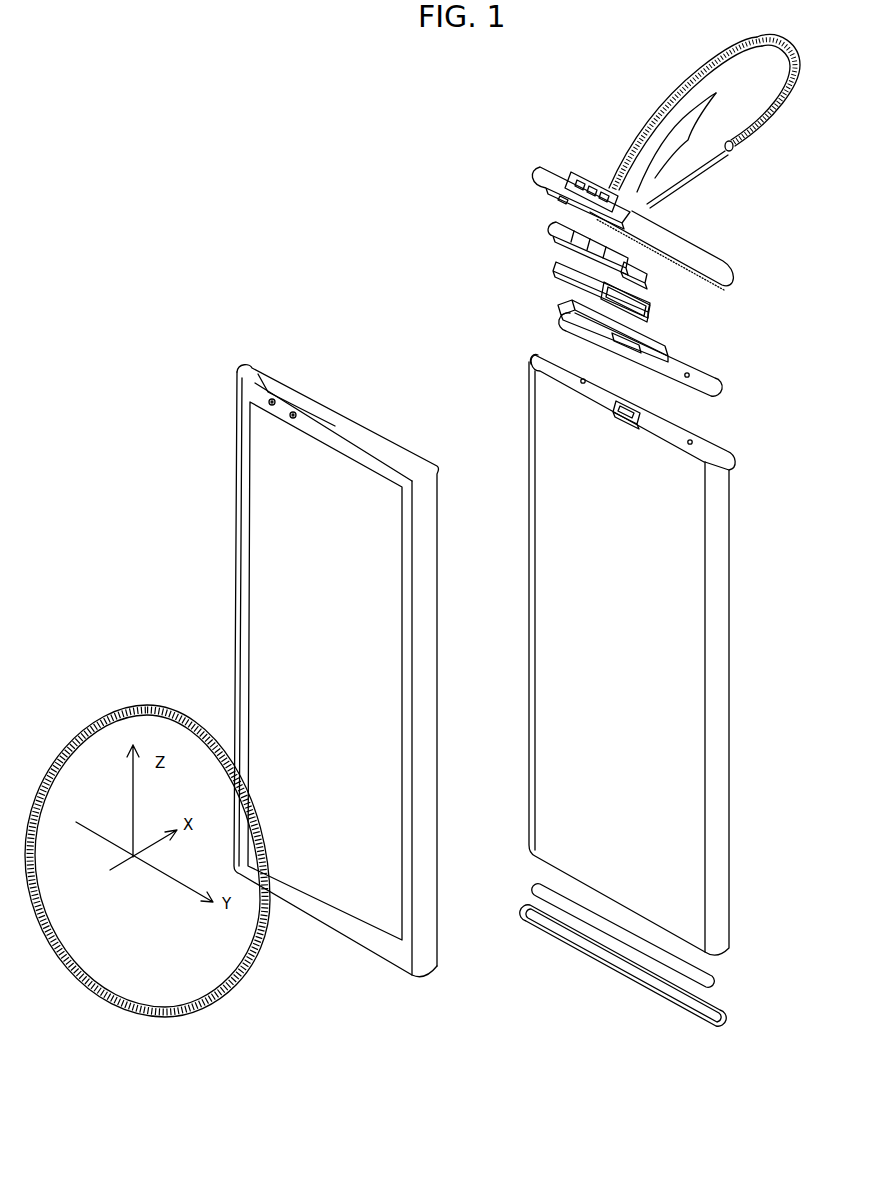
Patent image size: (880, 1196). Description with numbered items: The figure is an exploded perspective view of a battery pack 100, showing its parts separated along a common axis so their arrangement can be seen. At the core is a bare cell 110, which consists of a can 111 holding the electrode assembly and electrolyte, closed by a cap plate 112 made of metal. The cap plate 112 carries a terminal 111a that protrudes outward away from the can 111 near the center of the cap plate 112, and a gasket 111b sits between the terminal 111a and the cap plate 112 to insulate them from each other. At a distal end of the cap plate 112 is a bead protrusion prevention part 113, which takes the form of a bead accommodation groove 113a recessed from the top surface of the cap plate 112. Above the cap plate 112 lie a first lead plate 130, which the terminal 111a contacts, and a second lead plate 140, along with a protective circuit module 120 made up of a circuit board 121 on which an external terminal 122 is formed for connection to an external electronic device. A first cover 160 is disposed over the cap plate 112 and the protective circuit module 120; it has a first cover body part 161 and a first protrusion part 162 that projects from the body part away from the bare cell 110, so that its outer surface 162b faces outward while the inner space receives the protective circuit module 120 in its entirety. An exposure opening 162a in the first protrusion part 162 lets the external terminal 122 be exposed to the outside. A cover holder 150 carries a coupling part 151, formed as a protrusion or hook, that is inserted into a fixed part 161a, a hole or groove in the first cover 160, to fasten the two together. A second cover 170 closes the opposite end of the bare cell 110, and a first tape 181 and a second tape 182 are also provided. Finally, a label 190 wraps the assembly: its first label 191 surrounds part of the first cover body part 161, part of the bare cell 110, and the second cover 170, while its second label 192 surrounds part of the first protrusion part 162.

The battery pack 100 is at (374, 128).
The bare cell 110 is at (659, 655).
The can 111 is at (722, 578).
The terminal 111a is at (620, 418).
The gasket 111b is at (640, 425).
The cap plate 112 is at (706, 449).
The bead protrusion prevention part 113 is at (732, 471).
The bead accommodation groove 113a is at (531, 366).
The protective circuit module 120 is at (672, 211).
The circuit board 121 is at (615, 240).
The external terminal 122 is at (632, 215).
The first lead plate 130 is at (652, 284).
The second lead plate 140 is at (552, 228).
The cover holder 150 is at (560, 268).
The coupling part 151 is at (573, 308).
The first cover 160 is at (627, 132).
The first cover body part 161 is at (549, 168).
The fixed part 161a is at (563, 200).
The first protrusion part 162 is at (577, 176).
The exposure opening 162a is at (692, 104).
The outer surface 162b is at (709, 107).
The second cover 170 is at (650, 1001).
The first tape 181 is at (714, 381).
The second tape 182 is at (607, 930).
The label 190 is at (274, 671).
The first label 191 is at (270, 470).
The second label 192 is at (267, 401).